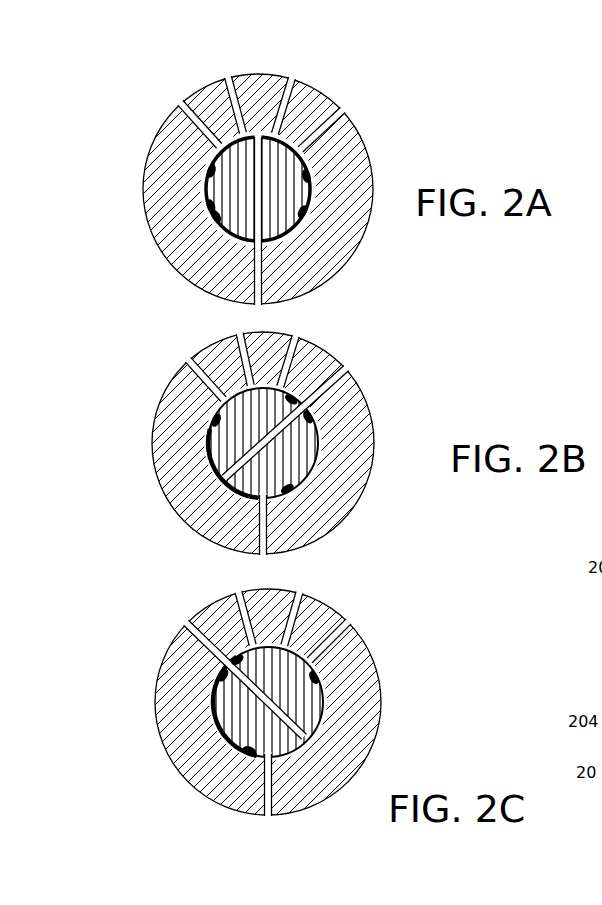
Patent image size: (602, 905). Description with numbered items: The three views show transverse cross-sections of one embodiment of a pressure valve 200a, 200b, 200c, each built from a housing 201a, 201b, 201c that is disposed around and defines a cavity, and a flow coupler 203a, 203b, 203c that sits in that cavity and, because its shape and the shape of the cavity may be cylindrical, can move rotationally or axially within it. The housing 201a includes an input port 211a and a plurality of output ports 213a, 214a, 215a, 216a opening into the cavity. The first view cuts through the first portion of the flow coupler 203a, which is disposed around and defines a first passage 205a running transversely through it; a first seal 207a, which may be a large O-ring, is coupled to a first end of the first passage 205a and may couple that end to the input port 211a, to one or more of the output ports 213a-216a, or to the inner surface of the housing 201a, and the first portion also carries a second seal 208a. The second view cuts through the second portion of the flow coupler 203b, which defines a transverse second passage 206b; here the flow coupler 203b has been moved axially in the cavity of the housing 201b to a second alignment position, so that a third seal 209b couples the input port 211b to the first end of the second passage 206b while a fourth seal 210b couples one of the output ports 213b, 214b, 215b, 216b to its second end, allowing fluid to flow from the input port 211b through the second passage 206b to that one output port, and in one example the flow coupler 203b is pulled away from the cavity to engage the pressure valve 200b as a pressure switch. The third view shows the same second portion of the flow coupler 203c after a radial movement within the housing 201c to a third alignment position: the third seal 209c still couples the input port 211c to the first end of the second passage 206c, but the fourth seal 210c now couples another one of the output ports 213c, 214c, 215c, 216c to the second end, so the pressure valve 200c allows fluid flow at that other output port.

In FIG. 2A, the pressure valve 200a is at (307, 187).
In FIG. 2A, the housing 201a is at (354, 176).
In FIG. 2A, the flow coupler 203a is at (226, 194).
In FIG. 2A, the first passage 205a is at (260, 204).
In FIG. 2A, the first seal 207a is at (204, 228).
In FIG. 2A, the second seal 208a is at (204, 160).
In FIG. 2A, the input port 211a is at (255, 303).
In FIG. 2A, the output port 213a is at (173, 105).
In FIG. 2A, the output port 214a is at (219, 78).
In FIG. 2A, the output port 215a is at (288, 74).
In FIG. 2A, the output port 216a is at (344, 102).
In FIG. 2B, the pressure valve 200b is at (318, 443).
In FIG. 2B, the housing 201b is at (366, 446).
In FIG. 2B, the flow coupler 203b is at (288, 453).
In FIG. 2B, the second passage 206b is at (224, 482).
In FIG. 2B, the third seal 209b is at (205, 428).
In FIG. 2B, the fourth seal 210b is at (325, 405).
In FIG. 2B, the input port 211b is at (260, 555).
In FIG. 2B, the output port 213b is at (184, 365).
In FIG. 2B, the output port 214b is at (248, 334).
In FIG. 2B, the output port 215b is at (303, 331).
In FIG. 2B, the output port 216b is at (360, 360).
In FIG. 2C, the pressure valve 200c is at (314, 723).
In FIG. 2C, the housing 201c is at (357, 755).
In FIG. 2C, the flow coupler 203c is at (306, 712).
In FIG. 2C, the second passage 206c is at (222, 714).
In FIG. 2C, the third seal 209c is at (325, 684).
In FIG. 2C, the fourth seal 210c is at (217, 674).
In FIG. 2C, the input port 211c is at (267, 821).
In FIG. 2C, the output port 213c is at (185, 623).
In FIG. 2C, the output port 214c is at (234, 594).
In FIG. 2C, the output port 215c is at (303, 593).
In FIG. 2C, the output port 216c is at (352, 622).